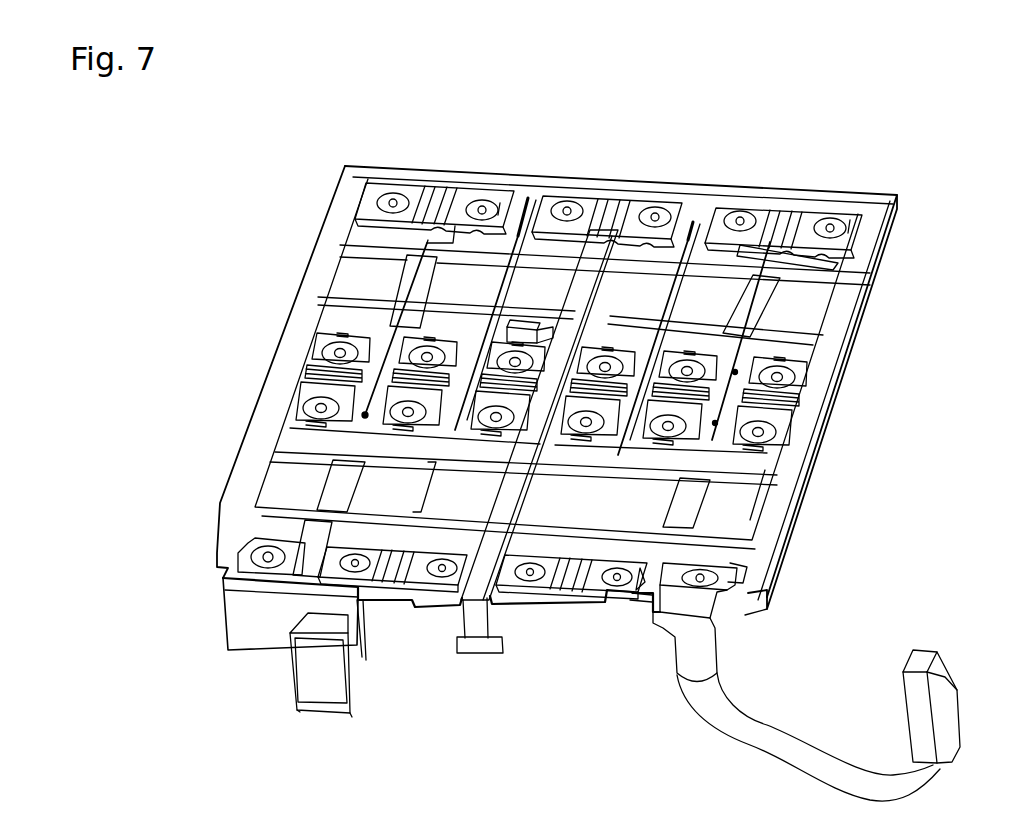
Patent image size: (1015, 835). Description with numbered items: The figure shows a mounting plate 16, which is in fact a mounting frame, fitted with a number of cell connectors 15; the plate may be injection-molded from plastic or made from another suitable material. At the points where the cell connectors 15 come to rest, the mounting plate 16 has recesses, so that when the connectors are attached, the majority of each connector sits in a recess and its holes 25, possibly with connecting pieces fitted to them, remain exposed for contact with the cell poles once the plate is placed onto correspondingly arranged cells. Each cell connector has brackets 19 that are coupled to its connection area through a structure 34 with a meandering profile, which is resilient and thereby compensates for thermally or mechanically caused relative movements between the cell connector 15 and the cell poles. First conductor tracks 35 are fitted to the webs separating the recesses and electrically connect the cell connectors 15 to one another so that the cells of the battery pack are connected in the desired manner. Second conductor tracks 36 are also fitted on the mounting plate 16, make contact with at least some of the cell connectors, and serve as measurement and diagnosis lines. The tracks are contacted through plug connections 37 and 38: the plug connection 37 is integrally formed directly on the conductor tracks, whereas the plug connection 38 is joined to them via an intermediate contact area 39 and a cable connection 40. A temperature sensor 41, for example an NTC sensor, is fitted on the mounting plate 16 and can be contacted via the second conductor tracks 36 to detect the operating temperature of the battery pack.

The cell connector 15 is at (843, 212).
The mounting plate 16 is at (265, 387).
The bracket 19 is at (477, 196).
The hole 25 is at (393, 202).
The structure 34 is at (793, 202).
The first conductor track 35 is at (413, 285).
The second conductor track 36 is at (823, 262).
The plug connection 37 is at (486, 653).
The plug connection 38 is at (957, 707).
The intermediate contact area 39 is at (692, 578).
The cable connection 40 is at (783, 747).
The temperature sensor 41 is at (527, 328).